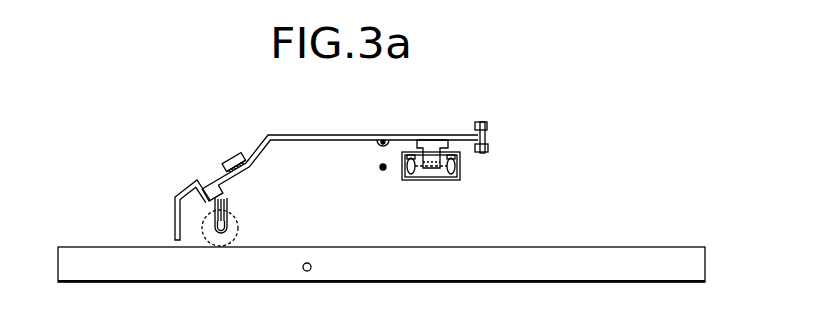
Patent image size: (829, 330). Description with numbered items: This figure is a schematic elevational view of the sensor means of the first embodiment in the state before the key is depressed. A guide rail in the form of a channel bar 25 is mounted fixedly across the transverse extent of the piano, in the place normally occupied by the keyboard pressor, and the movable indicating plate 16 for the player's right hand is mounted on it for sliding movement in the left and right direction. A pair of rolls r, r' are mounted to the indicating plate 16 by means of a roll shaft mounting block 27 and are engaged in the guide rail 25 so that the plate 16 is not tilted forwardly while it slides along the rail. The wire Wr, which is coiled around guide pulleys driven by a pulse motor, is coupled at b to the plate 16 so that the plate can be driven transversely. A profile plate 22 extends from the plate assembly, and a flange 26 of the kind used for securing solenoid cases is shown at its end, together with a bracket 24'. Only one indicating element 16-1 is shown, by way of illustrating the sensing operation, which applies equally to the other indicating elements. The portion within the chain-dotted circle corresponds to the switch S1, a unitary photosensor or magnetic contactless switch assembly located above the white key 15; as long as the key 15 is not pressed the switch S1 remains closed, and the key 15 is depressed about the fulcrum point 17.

The white key 15 is at (118, 255).
The movable indicating plate 16 is at (362, 135).
The indicating element 16-1 is at (231, 152).
The fulcrum point 17 is at (310, 270).
The profile plate 22 is at (288, 135).
The bracket 24' is at (196, 191).
The guide rail 25 is at (452, 172).
The flange 26 is at (483, 152).
The roll shaft mounting block 27 is at (432, 148).
The coupling point b is at (390, 138).
The roll r is at (422, 136).
The roll r' is at (460, 135).
The switch S1 is at (213, 246).
The wire Wr is at (380, 170).